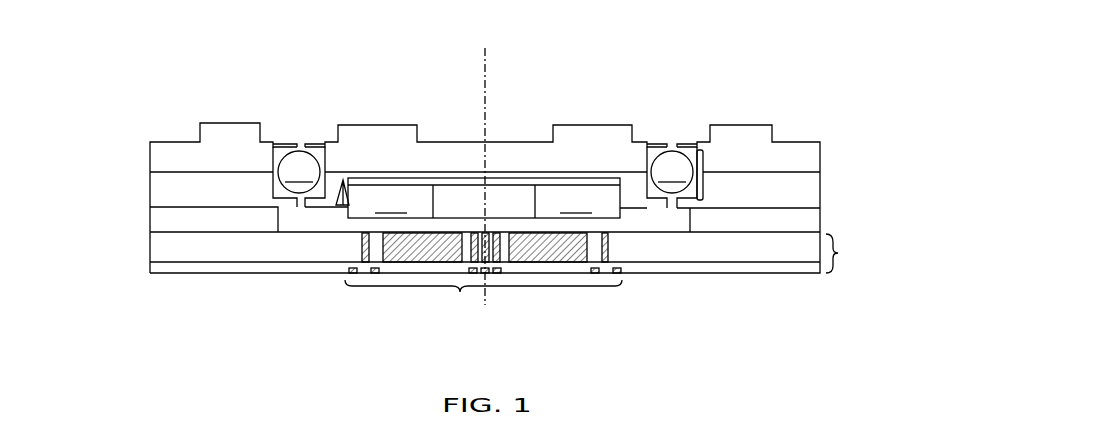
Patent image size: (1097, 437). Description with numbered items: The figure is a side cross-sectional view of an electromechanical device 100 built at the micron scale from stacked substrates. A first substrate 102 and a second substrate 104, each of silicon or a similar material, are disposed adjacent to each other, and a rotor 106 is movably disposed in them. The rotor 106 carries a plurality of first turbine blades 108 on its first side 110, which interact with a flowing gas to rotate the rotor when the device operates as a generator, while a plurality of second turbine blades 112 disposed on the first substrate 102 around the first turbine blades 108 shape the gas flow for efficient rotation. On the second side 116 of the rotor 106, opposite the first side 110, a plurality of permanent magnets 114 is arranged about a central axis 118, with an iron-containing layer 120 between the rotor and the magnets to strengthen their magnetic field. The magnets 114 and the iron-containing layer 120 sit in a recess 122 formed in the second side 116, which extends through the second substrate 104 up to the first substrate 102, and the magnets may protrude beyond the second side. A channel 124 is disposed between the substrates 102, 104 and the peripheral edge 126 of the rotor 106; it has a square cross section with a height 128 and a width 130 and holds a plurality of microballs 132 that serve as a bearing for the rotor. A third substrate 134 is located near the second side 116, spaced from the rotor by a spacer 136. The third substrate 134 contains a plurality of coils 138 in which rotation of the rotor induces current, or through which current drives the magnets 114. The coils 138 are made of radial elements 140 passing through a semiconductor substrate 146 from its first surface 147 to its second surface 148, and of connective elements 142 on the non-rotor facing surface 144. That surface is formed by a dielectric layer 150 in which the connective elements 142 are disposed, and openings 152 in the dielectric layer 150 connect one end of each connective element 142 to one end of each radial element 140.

The electromechanical device 100 is at (795, 62).
The first substrate 102 is at (822, 156).
The second substrate 104 is at (822, 191).
The rotor 106 is at (514, 102).
The first turbine blades 108 is at (385, 124).
The first side 110 is at (645, 125).
The second turbine blades 112 is at (230, 122).
The permanent magnets 114 is at (485, 201).
The second side 116 is at (647, 218).
The central axis 118 is at (485, 48).
The iron-containing layer 120 is at (553, 172).
The recess 122 is at (341, 182).
The channel 124 is at (281, 145).
The peripheral edge 126 is at (301, 145).
The height 128 is at (706, 182).
The width 130 is at (671, 146).
The microballs 132 is at (485, 177).
The third substrate 134 is at (840, 253).
The spacer 136 is at (822, 223).
The coils 138 is at (483, 298).
The radial elements 140 is at (546, 263).
The connective elements 142 is at (375, 274).
The non-rotor facing surface 144 is at (717, 285).
The semiconductor substrate 146 is at (150, 243).
The first surface 147 is at (214, 240).
The second surface 148 is at (283, 258).
The dielectric layer 150 is at (150, 266).
The openings 152 is at (351, 273).